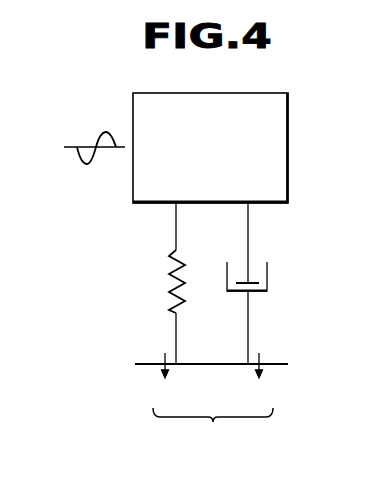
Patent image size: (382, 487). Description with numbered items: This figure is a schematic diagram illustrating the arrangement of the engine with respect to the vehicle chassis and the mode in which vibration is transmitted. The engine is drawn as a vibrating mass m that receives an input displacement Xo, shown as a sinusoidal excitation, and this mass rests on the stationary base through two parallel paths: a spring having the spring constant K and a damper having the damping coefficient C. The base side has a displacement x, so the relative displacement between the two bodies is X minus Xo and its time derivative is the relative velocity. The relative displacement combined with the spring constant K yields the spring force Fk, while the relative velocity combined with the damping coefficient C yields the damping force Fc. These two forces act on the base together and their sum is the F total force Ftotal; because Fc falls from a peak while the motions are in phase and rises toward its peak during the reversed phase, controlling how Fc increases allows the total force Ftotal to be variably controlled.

The engine mass (ENG) m is at (210, 148).
The input displacement Xo is at (89, 145).
The spring constant K is at (166, 283).
The damping coefficient C is at (257, 283).
The displacement x is at (201, 364).
The spring force Fk is at (167, 379).
The damping force Fc is at (261, 379).
The F total force Ftotal is at (213, 427).